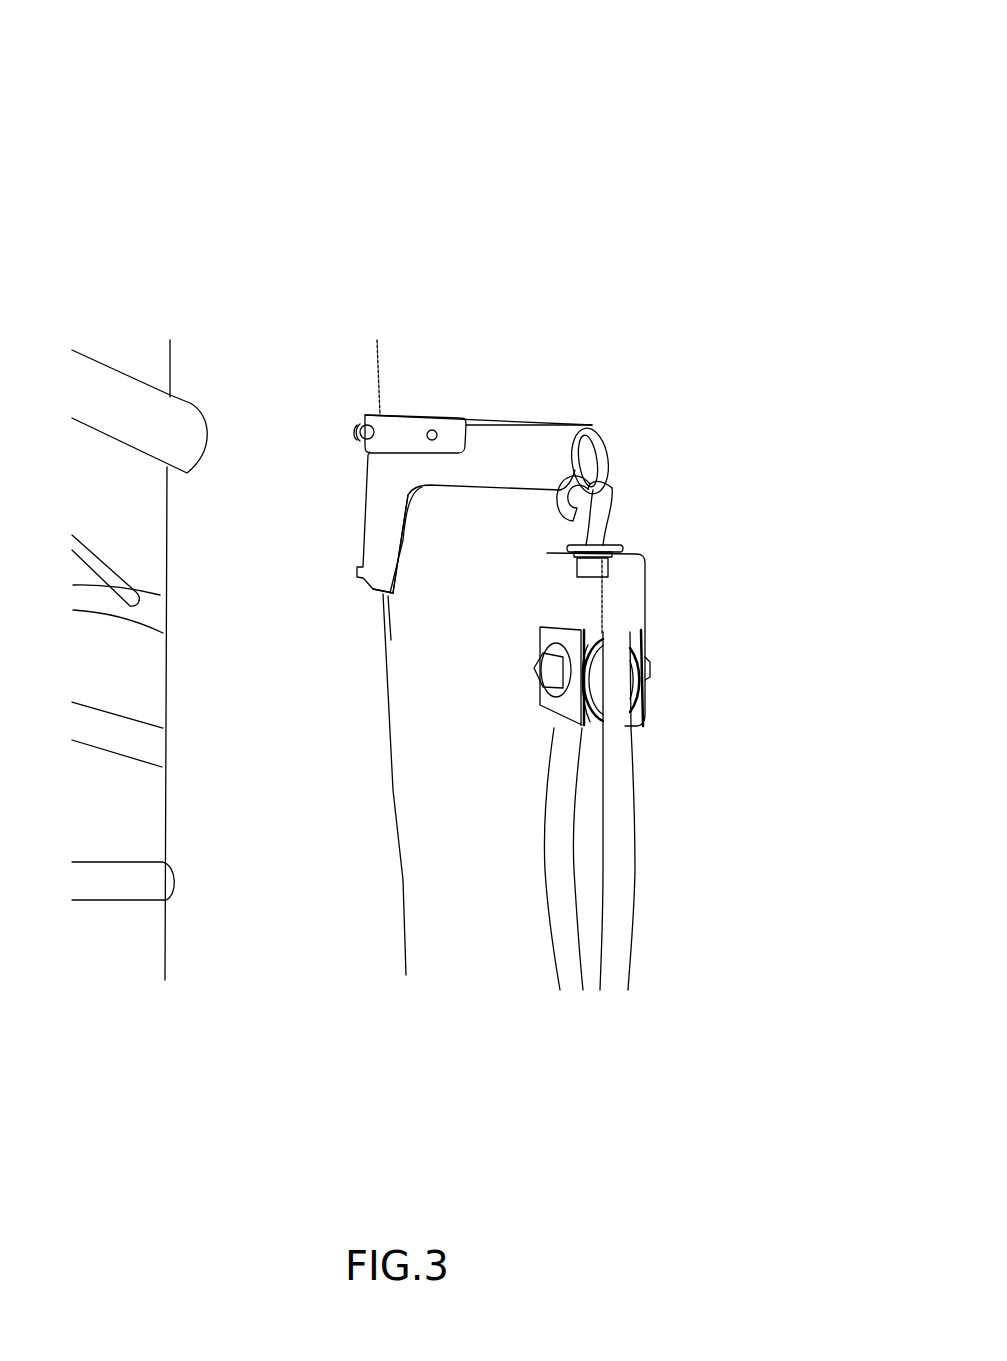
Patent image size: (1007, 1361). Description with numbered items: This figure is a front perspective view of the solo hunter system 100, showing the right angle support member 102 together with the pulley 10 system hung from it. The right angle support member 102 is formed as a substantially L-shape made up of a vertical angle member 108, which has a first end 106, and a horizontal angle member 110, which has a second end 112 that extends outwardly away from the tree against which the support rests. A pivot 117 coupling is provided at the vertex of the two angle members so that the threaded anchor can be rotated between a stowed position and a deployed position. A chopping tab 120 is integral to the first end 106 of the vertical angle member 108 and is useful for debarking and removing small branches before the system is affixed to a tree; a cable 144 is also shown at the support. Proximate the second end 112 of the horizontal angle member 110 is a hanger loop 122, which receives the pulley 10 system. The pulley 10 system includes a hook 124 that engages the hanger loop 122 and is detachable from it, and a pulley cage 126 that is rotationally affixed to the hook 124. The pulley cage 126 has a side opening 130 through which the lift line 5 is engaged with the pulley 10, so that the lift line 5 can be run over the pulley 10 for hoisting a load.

The solo hunter system 100 is at (458, 125).
The cable 144 is at (362, 412).
The pivot 117 is at (373, 428).
The right angle support member 102 is at (473, 506).
The horizontal angle member 110 is at (485, 437).
The hanger loop 122 is at (587, 432).
The second end 112 is at (607, 467).
The hook 124 is at (597, 520).
The pulley cage 126 is at (628, 587).
The pulley 10 is at (625, 650).
The side opening 130 is at (562, 622).
The vertical angle member 108 is at (387, 525).
The chopping tab 120 is at (393, 598).
The first end 106 is at (383, 597).
The lift line 5 is at (623, 837).